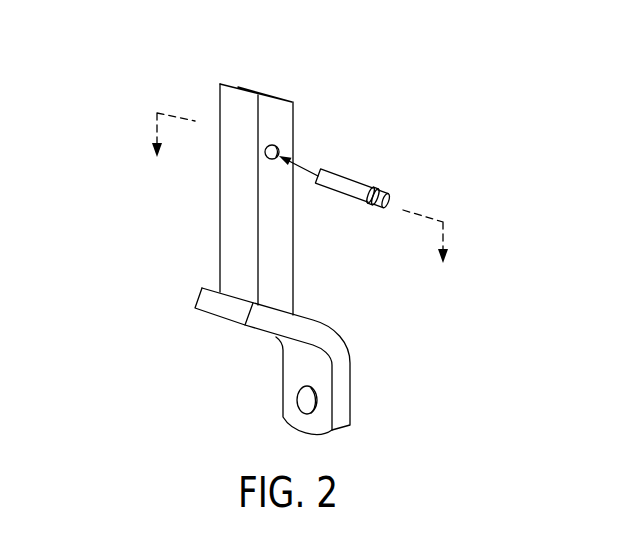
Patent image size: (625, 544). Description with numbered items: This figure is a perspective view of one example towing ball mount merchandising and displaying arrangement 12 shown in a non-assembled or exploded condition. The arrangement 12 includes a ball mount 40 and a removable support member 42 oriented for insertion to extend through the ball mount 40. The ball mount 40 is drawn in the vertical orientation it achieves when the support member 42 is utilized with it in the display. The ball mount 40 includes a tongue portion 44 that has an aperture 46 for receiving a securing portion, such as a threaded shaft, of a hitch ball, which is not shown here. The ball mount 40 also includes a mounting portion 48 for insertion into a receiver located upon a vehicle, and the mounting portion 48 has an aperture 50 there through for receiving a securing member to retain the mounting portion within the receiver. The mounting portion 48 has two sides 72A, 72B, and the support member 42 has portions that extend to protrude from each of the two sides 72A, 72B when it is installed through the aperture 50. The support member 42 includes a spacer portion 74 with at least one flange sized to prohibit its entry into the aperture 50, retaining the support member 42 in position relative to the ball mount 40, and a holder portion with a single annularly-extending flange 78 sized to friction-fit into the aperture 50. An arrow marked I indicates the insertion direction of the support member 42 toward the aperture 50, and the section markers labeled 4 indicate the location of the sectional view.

The towing ball mount merchandising and displaying arrangement 12 is at (136, 95).
The ball mount 40 is at (200, 262).
The support member 42 is at (384, 146).
The tongue portion 44 is at (343, 398).
The aperture 46 is at (298, 396).
The mounting portion 48 is at (229, 112).
The aperture 50 is at (280, 150).
The side 72A is at (280, 261).
The side 72B is at (218, 203).
The spacer portion 74 is at (372, 207).
The annularly-extending flange 78 is at (372, 195).
The insertion direction I is at (306, 160).
The section line 4- 4 is at (300, 209).